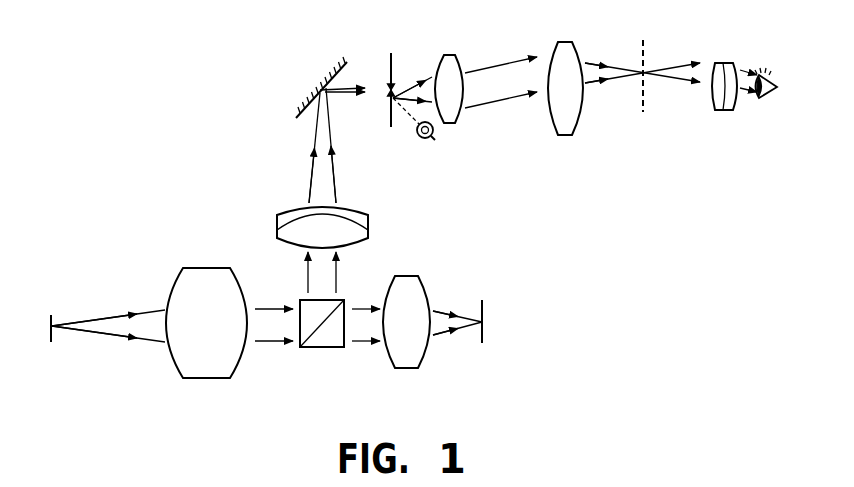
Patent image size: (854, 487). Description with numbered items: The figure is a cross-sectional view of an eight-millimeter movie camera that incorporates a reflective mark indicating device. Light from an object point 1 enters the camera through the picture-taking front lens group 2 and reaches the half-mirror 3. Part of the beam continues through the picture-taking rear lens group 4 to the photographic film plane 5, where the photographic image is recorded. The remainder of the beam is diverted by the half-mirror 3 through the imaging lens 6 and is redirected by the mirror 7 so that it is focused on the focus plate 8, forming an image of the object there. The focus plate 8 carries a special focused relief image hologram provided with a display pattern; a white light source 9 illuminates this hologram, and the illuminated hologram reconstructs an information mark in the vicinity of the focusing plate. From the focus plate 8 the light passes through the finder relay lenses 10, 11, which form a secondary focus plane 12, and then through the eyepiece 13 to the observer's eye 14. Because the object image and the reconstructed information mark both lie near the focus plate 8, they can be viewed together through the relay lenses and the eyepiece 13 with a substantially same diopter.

The object point 1 is at (53, 319).
The picture-taking front lens group 2 is at (203, 379).
The half-mirror 3 is at (318, 348).
The picture-taking rear lens group 4 is at (427, 361).
The photographic film plane 5 is at (485, 338).
The imaging lens 6 is at (277, 228).
The mirror 7 is at (347, 62).
The focus plate 8 is at (392, 55).
The white light source 9 is at (420, 138).
The finder relay lens 10 is at (447, 56).
The finder relay lens 11 is at (565, 42).
The secondary focus plane 12 is at (644, 40).
The eyepiece 13 is at (725, 62).
The eye of observer 14 is at (765, 68).